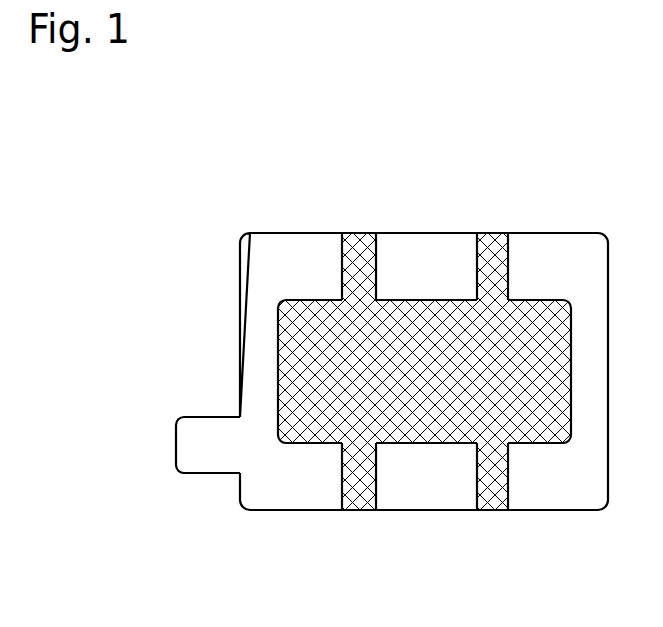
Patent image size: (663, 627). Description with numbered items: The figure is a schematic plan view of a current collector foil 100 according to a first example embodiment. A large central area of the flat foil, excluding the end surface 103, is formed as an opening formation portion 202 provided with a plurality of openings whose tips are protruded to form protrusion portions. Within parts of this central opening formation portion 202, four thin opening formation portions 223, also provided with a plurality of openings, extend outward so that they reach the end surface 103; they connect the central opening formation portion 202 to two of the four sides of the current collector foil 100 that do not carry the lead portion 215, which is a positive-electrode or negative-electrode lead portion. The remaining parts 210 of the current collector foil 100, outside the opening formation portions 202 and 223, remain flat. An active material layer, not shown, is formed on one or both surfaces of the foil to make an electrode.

The current collector foil 100 is at (430, 51).
The flat parts 210 is at (270, 245).
The end surface 103 is at (408, 231).
The lead portion 215 is at (192, 460).
The opening formation portion 202 is at (547, 437).
The opening formation portions 223 is at (491, 498).